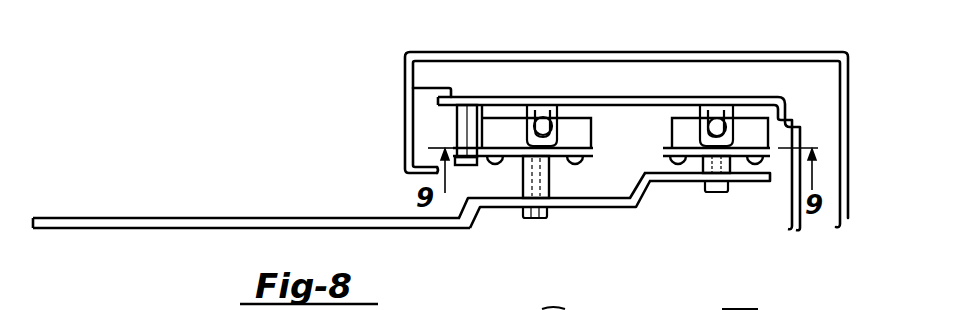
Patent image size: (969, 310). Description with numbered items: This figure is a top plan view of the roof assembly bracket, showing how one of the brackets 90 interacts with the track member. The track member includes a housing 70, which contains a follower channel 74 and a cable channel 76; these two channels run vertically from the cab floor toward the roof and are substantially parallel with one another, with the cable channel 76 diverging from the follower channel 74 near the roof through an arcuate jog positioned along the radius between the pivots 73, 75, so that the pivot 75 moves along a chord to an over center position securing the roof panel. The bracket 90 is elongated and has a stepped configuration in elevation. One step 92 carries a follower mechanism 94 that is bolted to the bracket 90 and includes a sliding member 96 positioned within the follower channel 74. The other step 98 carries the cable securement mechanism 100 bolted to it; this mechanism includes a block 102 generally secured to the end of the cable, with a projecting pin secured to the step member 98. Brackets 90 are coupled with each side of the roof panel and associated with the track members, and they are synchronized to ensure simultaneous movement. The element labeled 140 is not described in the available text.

The bracket 90 is at (222, 219).
The step 92 is at (565, 200).
The step 98 is at (683, 176).
The cable securement mechanism 100 is at (456, 129).
The housing 70 is at (589, 143).
The sliding member 96 is at (537, 117).
The follower channel 74 is at (550, 127).
The second slider block 140 is at (730, 145).
The block 102 is at (712, 116).
The cable channel 76 is at (727, 133).
The follower mechanism 94 is at (555, 166).
The pivot 73 is at (537, 220).
The pivot 75 is at (721, 192).